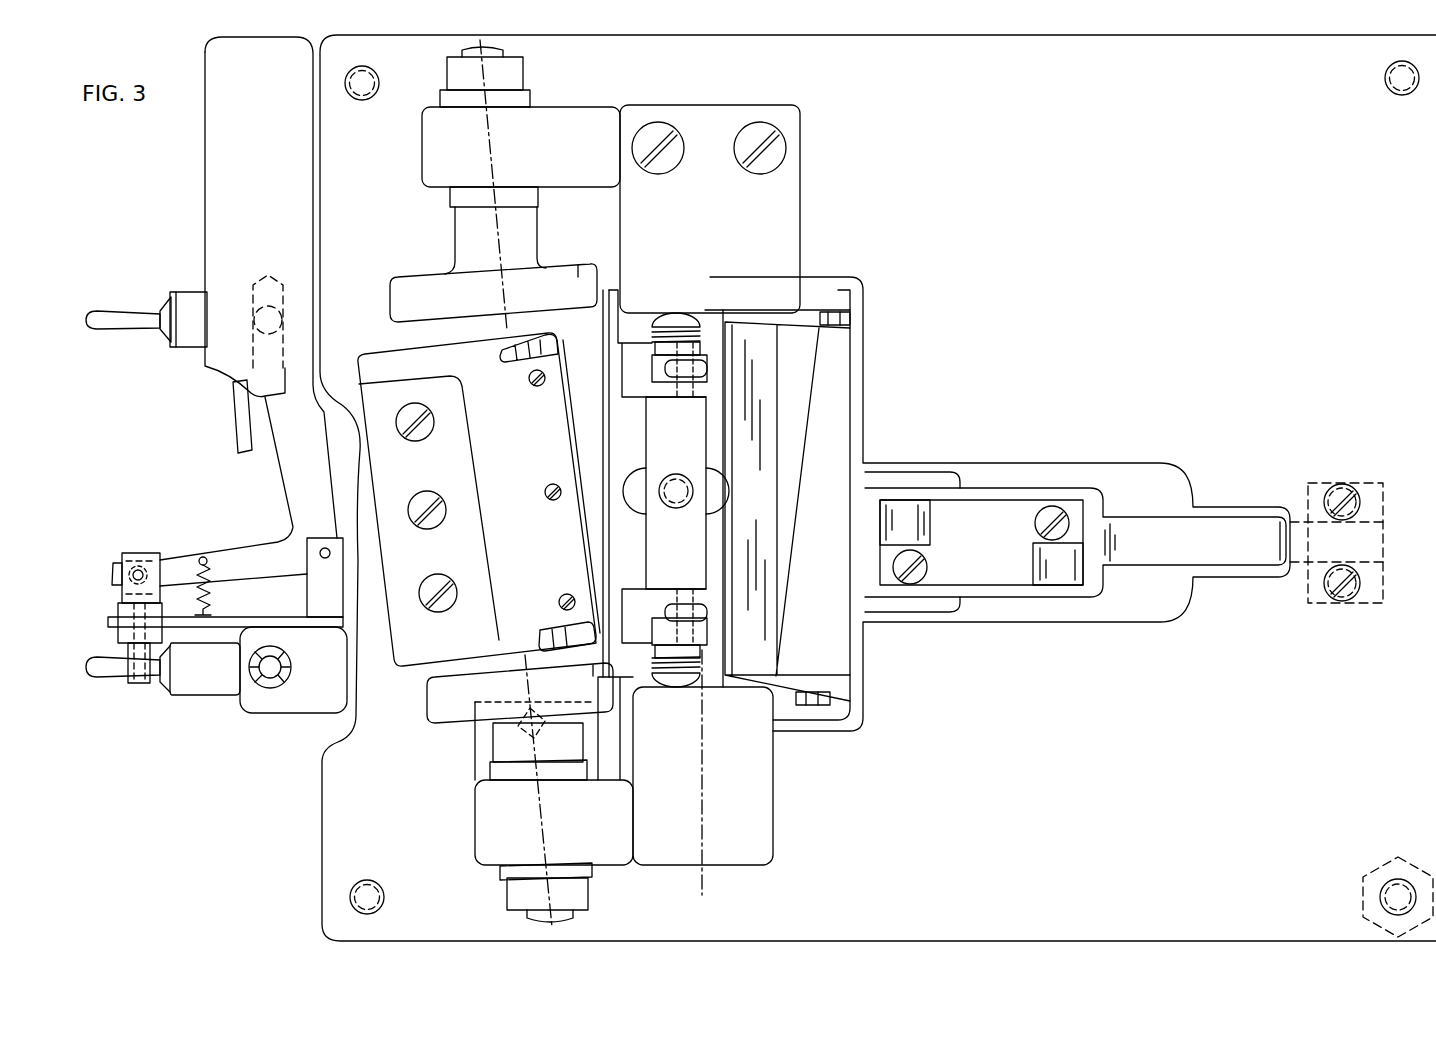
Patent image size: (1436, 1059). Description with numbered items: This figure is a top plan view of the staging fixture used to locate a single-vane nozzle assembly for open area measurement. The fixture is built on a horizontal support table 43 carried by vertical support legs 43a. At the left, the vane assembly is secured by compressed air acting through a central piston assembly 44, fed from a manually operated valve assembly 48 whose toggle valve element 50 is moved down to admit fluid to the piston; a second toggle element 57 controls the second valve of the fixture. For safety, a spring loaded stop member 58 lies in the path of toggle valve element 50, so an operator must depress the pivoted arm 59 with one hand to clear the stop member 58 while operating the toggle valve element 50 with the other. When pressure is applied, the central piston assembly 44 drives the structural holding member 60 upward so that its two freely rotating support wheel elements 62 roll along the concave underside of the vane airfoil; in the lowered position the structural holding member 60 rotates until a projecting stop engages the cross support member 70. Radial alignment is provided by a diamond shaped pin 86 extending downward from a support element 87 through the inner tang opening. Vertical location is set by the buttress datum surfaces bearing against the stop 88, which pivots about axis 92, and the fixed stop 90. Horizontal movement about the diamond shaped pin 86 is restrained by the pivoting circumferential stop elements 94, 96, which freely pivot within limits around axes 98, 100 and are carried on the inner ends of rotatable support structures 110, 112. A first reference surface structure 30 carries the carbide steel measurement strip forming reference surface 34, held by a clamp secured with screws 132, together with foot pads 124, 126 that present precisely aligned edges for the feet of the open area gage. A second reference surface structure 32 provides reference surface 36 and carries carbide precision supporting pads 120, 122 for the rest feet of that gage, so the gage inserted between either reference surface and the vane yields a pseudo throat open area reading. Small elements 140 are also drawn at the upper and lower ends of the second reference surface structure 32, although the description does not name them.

The first reference surface structure 30 is at (535, 542).
The second reference surface structure 32 is at (840, 554).
The reference surface 34 is at (572, 432).
The reference surface 36 is at (766, 496).
The horizontal support table 43 is at (1143, 266).
The vertical support legs 43a is at (1380, 864).
The central piston assembly 44 is at (641, 503).
The manually operated valve assembly 48 is at (315, 703).
The toggle valve element 50 is at (106, 680).
The toggle element 57 is at (186, 348).
The stop member 58 is at (140, 690).
The pivoted arm 59 is at (282, 468).
The structural holding member 60 is at (630, 350).
The support wheel elements 62 is at (667, 370).
The cross support member 70 is at (661, 567).
The diamond shaped pin 86 is at (534, 732).
The support element 87 is at (572, 725).
The stop 88 is at (766, 787).
The stop 90 is at (790, 208).
The axis 92 is at (705, 880).
The pivoting circumferential stop element 94 is at (436, 700).
The pivoting circumferential stop element 96 is at (400, 297).
The axis 98 is at (546, 828).
The axis 100 is at (493, 156).
The rotatable support structure 110 is at (490, 770).
The rotatable support structure 112 is at (450, 198).
The precision supporting pad 120 is at (915, 530).
The precision supporting pad 122 is at (1055, 572).
The foot pad 124 is at (540, 336).
The foot pad 126 is at (592, 648).
The screws 132 is at (531, 385).
The spacer block 140 is at (838, 311).